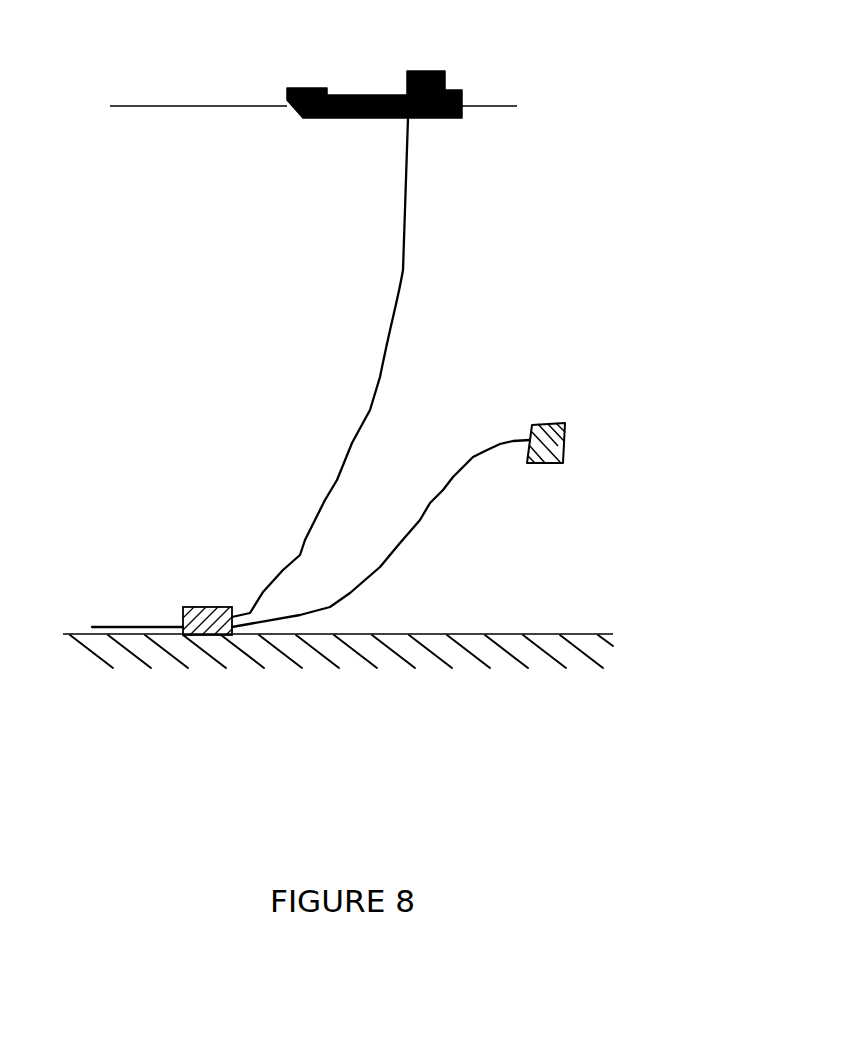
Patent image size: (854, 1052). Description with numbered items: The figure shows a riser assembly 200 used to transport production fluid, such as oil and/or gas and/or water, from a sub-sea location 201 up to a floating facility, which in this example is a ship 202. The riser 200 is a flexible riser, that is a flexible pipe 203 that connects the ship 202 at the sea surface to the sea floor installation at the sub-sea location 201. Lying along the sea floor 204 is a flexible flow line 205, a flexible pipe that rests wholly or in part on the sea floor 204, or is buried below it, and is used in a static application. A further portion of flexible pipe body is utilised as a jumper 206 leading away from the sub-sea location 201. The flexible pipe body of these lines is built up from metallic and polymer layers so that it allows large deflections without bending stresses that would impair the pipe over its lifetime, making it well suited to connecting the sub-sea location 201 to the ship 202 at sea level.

The riser assembly 200 is at (420, 319).
The sub-sea location 201 is at (192, 607).
The ship 202 is at (296, 88).
The riser cable 203 is at (320, 508).
The sea floor 204 is at (508, 633).
The flexible flow line 205 is at (125, 627).
The jumper 206 is at (433, 505).